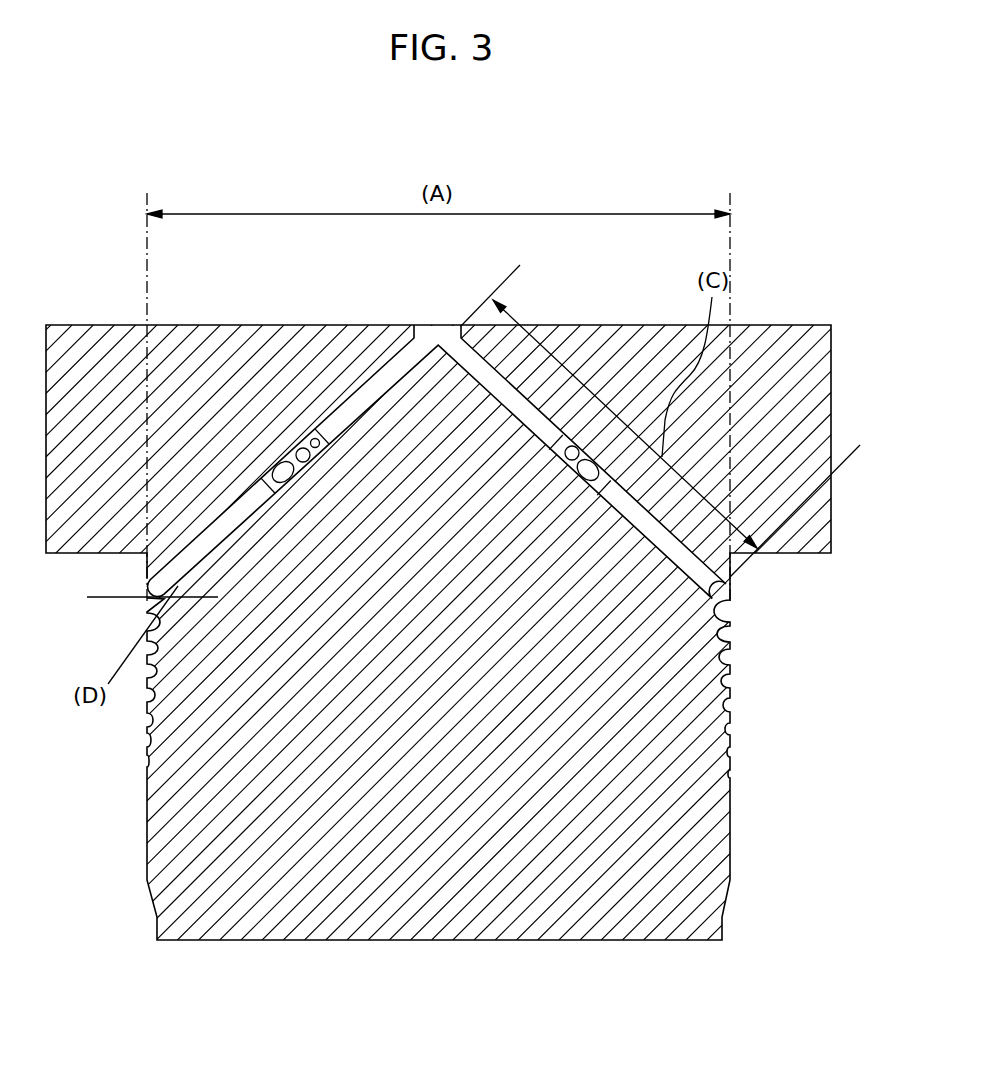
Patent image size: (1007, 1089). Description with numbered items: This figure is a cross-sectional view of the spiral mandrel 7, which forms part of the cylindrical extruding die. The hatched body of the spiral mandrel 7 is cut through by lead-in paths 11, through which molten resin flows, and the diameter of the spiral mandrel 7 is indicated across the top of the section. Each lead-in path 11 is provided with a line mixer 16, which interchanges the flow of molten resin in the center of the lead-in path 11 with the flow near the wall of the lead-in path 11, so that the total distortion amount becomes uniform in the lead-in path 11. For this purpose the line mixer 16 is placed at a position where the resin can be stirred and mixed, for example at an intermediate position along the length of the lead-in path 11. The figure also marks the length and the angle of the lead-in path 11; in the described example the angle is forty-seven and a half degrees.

The spiral mandrel 7 is at (575, 287).
The lead-in path 11 is at (360, 388).
The line mixer 16 is at (279, 459).